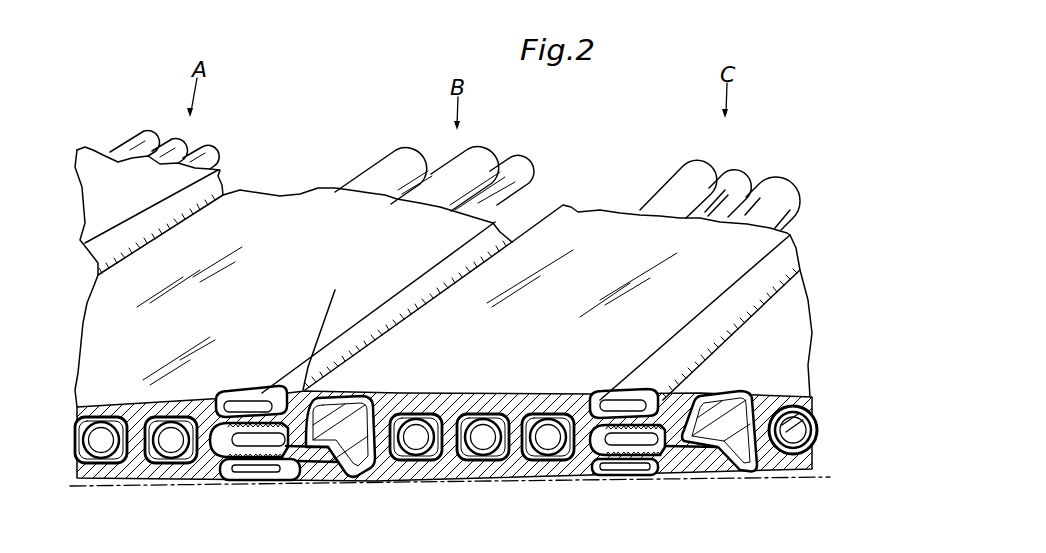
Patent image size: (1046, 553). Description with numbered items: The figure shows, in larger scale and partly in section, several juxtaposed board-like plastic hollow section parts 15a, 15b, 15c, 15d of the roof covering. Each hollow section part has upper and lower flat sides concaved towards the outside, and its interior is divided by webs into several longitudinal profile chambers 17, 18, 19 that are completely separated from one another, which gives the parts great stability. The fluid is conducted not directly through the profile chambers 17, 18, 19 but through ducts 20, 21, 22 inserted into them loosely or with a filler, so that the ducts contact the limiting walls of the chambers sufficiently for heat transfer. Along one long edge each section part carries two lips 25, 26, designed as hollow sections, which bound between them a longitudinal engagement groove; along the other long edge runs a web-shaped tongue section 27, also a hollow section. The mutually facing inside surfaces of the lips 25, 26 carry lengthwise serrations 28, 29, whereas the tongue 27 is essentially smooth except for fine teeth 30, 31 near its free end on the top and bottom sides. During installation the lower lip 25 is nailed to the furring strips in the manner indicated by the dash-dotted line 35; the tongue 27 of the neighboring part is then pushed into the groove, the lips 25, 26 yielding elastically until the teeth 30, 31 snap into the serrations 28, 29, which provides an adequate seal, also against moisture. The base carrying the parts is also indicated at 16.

The hollow section part 15a is at (92, 165).
The hollow section part 15b is at (292, 208).
The hollow section part 15c is at (594, 225).
The hollow section part 15d is at (745, 352).
The base plate 16 is at (247, 492).
The profile chamber 17 is at (425, 392).
The profile chamber 18 is at (500, 392).
The profile chamber 19 is at (563, 392).
The duct 20 is at (683, 188).
The duct 21 is at (732, 185).
The duct 22 is at (772, 185).
The lower lip 25 is at (658, 478).
The upper lip 26 is at (622, 395).
The tongue section 27 is at (273, 485).
The serration 28 is at (250, 423).
The serration 29 is at (225, 470).
The fine tooth 30 is at (608, 425).
The fine tooth 31 is at (603, 470).
The dash-dotted line 35 is at (330, 306).